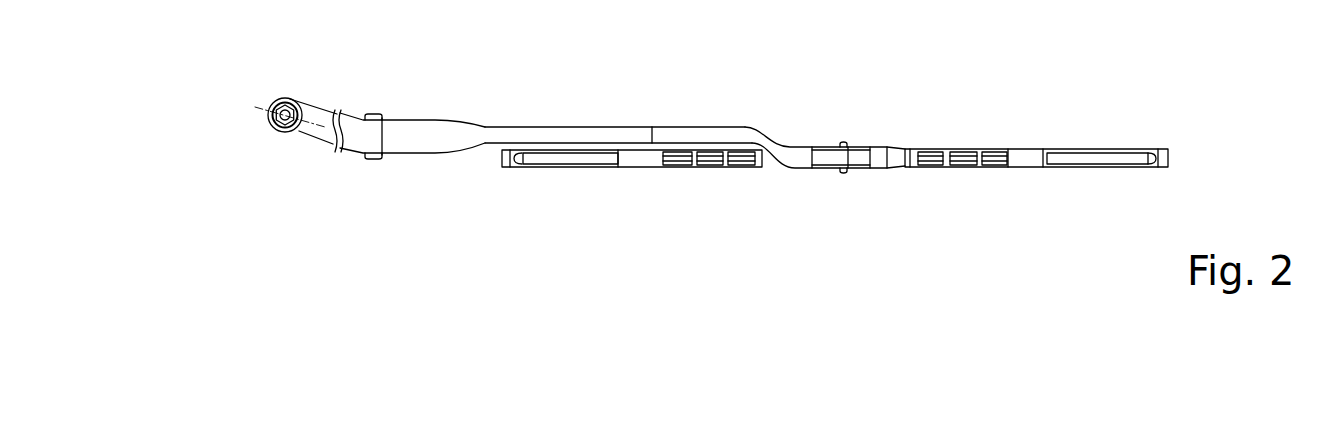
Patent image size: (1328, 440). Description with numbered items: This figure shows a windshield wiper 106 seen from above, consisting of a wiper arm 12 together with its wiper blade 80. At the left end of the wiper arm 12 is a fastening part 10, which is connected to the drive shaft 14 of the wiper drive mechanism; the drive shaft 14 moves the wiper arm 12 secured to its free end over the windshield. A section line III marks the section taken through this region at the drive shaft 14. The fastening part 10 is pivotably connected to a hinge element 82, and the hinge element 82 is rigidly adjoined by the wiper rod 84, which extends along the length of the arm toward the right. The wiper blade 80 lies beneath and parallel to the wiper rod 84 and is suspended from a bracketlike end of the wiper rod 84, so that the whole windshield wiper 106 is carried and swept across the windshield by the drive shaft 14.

The fastening part 10 is at (354, 139).
The wiper arm 12 is at (537, 101).
The drive shaft 14 is at (327, 73).
The wiper blade 80 is at (927, 179).
The hinge element 82 is at (440, 209).
The wiper rod 84 is at (759, 93).
The windshield wiper 106 is at (635, 192).
The section line III- III is at (249, 118).